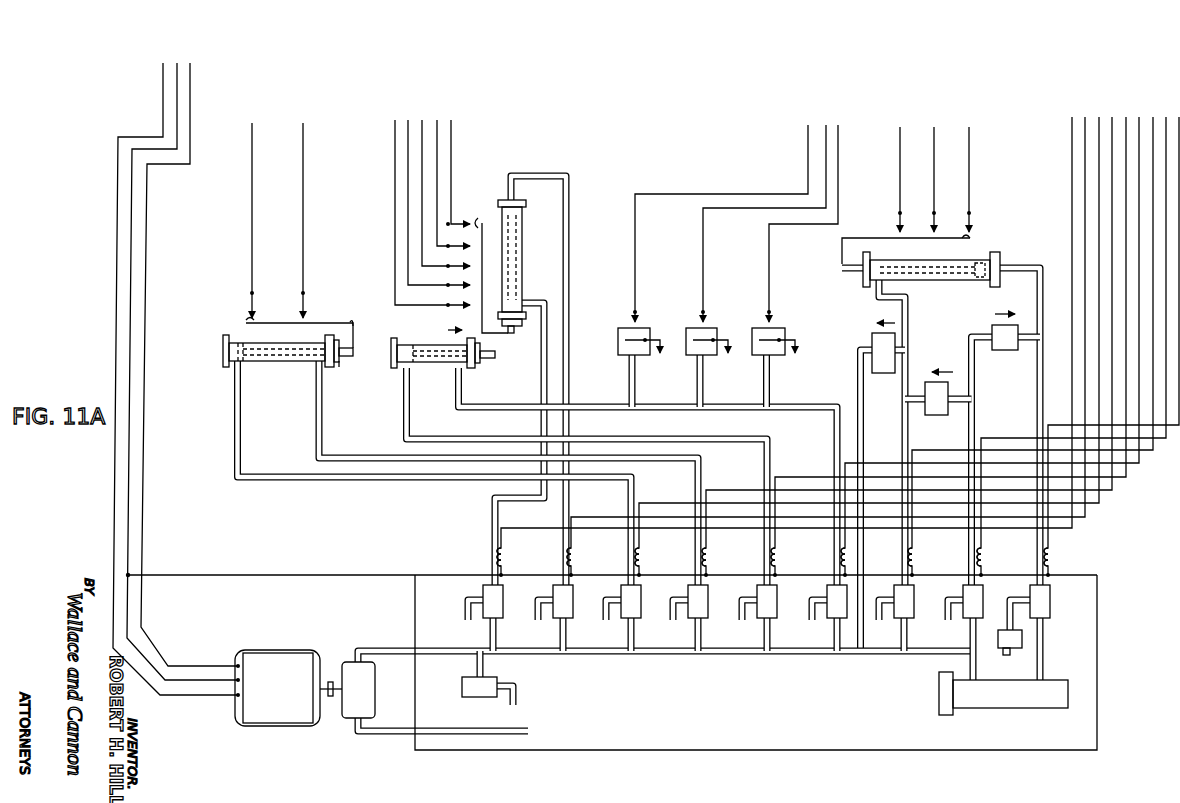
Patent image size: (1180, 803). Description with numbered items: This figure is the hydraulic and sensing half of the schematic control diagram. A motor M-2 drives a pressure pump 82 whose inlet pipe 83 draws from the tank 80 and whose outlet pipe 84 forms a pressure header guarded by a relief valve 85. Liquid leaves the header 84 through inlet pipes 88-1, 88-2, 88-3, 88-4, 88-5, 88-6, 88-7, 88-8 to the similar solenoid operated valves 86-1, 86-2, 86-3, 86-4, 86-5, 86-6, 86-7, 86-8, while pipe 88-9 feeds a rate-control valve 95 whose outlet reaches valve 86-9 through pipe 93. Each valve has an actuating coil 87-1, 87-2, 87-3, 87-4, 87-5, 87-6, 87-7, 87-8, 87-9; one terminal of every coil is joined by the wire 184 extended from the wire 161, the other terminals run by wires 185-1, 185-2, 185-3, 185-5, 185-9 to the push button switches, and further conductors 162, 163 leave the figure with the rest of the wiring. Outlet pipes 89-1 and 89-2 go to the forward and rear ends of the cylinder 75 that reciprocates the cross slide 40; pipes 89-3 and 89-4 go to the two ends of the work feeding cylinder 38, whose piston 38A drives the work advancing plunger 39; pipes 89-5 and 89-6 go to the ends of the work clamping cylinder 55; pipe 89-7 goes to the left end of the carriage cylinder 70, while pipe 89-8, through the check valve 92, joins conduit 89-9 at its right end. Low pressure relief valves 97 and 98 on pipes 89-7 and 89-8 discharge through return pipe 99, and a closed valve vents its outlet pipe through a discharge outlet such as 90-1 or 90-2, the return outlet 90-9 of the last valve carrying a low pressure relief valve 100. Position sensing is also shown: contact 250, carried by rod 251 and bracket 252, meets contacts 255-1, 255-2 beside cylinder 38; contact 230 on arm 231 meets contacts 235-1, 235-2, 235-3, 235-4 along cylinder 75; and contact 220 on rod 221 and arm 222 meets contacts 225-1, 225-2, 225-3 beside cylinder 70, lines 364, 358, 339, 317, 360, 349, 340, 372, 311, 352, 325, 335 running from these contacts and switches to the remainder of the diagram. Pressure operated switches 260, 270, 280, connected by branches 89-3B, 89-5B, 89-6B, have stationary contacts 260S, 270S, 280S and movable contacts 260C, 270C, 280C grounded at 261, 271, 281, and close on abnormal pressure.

The wire 161 is at (117, 236).
The power supply line 162 is at (131, 268).
The power supply line 163 is at (146, 296).
The wire 184 is at (314, 578).
The tank 80 is at (414, 598).
The pressure pump 82 is at (364, 698).
The inlet pipe 83 is at (402, 735).
The outlet pipe 84 is at (700, 655).
The pressure relief valve 85 is at (482, 697).
The motor M-2 is at (288, 688).
The signal line 364 is at (251, 188).
The signal line 358 is at (302, 188).
The adjustable sensing contact 255-1 is at (250, 294).
The adjustable sensing contact 255-2 is at (308, 290).
The movable contact 250 is at (245, 318).
The rod 251 is at (286, 323).
The bracket 252 is at (352, 326).
The piston and cylinder device 38 is at (293, 363).
The piston 38A is at (232, 366).
The abutment head 39 is at (336, 367).
The cylinder 55 is at (447, 363).
The cross slide 40 is at (495, 335).
The hydraulic cylinder 75 is at (523, 290).
The arm 231 is at (483, 262).
The movable contact 230 is at (474, 218).
The adjustable sensing contact 235-1 is at (458, 222).
The adjustable sensing contact 235-2 is at (455, 246).
The adjustable sensing contact 235-3 is at (446, 266).
The adjustable sensing contact 235-4 is at (418, 286).
The signal line 339 is at (408, 120).
The signal line 317 is at (423, 120).
The signal line 360 is at (438, 120).
The signal line 349 is at (452, 135).
The signal line 340 is at (394, 136).
The outlet pipe 89-1 is at (491, 510).
The outlet pipe 89-2 is at (570, 240).
The pipe 89-3 is at (396, 484).
The pipe 89-4 is at (338, 455).
The pipe 89-5 is at (438, 436).
The pipe 89-6 is at (784, 416).
The pipe 89-7 is at (909, 321).
The pipe 89-8 is at (976, 377).
The conduit 89-9 is at (1060, 262).
The branch 89-3B is at (632, 428).
The pipe 89-5B is at (700, 428).
The pipe 89-6B is at (766, 405).
The pressure operated switch 260 is at (619, 330).
The stationary contact 260S is at (634, 313).
The ground 261 is at (663, 357).
The movable contact 260C is at (645, 342).
The pressure operated switch 270 is at (687, 330).
The stationary contact 270S is at (702, 313).
The ground 271 is at (731, 357).
The movable contact 270C is at (713, 342).
The pressure operated switch 280 is at (754, 330).
The stationary contact 280S is at (768, 313).
The ground 281 is at (798, 357).
The movable contact 280C is at (780, 342).
The control line 372 is at (807, 148).
The control line 311 is at (775, 208).
The control line 352 is at (839, 166).
The cylinder 70 is at (958, 281).
The supporting rod 221 is at (882, 238).
The moving contact 220 is at (972, 236).
The upstanding arm 222 is at (842, 252).
The adjustable sensing contact 225-1 is at (971, 214).
The adjustable sensing contact 225-2 is at (934, 214).
The adjustable sensing contact 225-3 is at (878, 179).
The signal line 325 is at (935, 180).
The signal line 335 is at (970, 180).
The check valve 92 is at (995, 322).
The low pressure relief valve 97 is at (874, 338).
The low pressure relief valve 98 is at (930, 415).
The return pipe 99 is at (861, 424).
The wire 185-1 is at (1071, 127).
The wire 185-2 is at (1084, 127).
The wire 185-3 is at (1098, 127).
The wire 185-5 is at (1126, 127).
The wire 185-9 is at (1178, 127).
The actuating coil 87-1 is at (504, 562).
The actuating coil 87-2 is at (574, 562).
The actuating coil 87-3 is at (642, 562).
The actuating coil 87-4 is at (709, 562).
The actuating coil 87-5 is at (778, 562).
The actuating coil 87-6 is at (848, 562).
The actuating coil 87-7 is at (915, 562).
The actuating coil 87-8 is at (984, 562).
The actuating coil 87-9 is at (1051, 562).
The solenoid operated valve 86-1 is at (503, 596).
The solenoid operated valve 86-2 is at (571, 604).
The solenoid operated valve 86-3 is at (641, 596).
The solenoid operated valve 86-4 is at (708, 596).
The solenoid operated valve 86-5 is at (777, 596).
The solenoid operated valve 86-6 is at (848, 597).
The solenoid operated valve 86-7 is at (915, 594).
The solenoid operated valve 86-8 is at (984, 594).
The solenoid operated valve 86-9 is at (1047, 598).
The inlet pipe 88-1 is at (497, 640).
The inlet pipe 88-2 is at (567, 640).
The pipe 88-3 is at (635, 640).
The pipe 88-4 is at (702, 640).
The pipe 88-5 is at (771, 640).
The pipe 88-6 is at (841, 640).
The pipe 88-7 is at (908, 640).
The pipe 88-8 is at (969, 640).
The pipe 88-9 is at (1036, 666).
The discharge outlet 90-1 is at (466, 611).
The discharge outlet 90-2 is at (536, 611).
The return outlet 90-9 is at (1010, 606).
The low pressure relief valve 100 is at (1023, 636).
The pipe 93 is at (1044, 664).
The rate-control valve 95 is at (1042, 708).